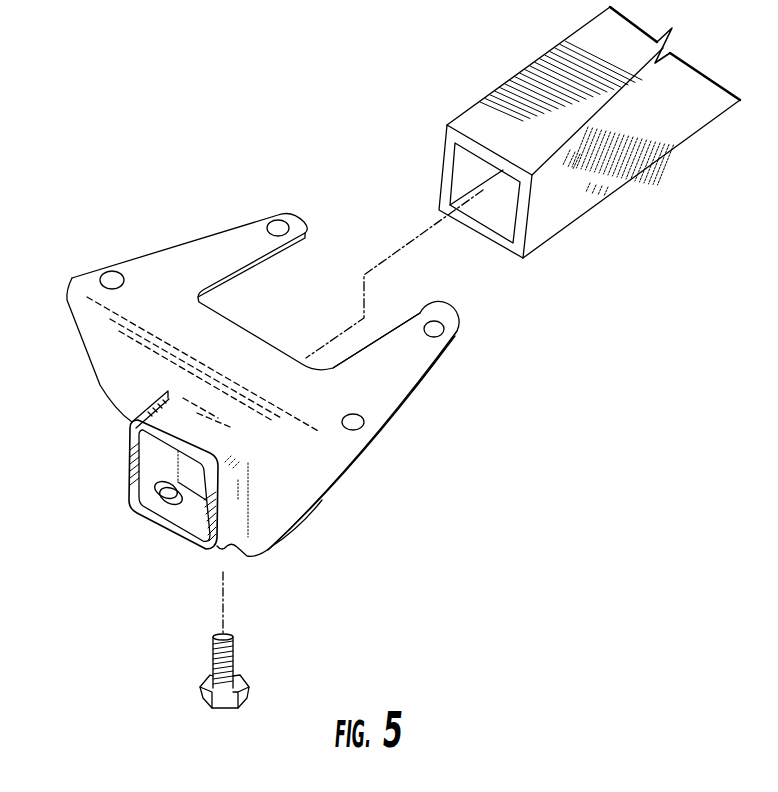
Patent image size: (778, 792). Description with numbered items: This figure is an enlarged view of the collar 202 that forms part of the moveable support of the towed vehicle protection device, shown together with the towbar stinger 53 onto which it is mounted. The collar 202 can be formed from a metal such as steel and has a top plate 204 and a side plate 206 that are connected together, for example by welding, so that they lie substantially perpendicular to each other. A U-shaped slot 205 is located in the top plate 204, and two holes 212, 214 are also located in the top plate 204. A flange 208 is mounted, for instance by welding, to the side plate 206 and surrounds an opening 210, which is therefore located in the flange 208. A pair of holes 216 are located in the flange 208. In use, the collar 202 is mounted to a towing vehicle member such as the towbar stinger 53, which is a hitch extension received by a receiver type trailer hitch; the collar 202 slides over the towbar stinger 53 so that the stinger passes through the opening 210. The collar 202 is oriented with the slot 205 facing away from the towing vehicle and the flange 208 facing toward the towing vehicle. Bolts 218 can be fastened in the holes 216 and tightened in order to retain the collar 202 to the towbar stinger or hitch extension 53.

The towbar stinger 53 is at (517, 75).
The collar 202 is at (170, 243).
The top plate 204 is at (402, 380).
The U-shaped slot 205 is at (313, 283).
The side plate 206 is at (305, 488).
The flange 208 is at (142, 485).
The opening 210 is at (158, 460).
The hole 212 is at (444, 334).
The hole 214 is at (363, 423).
The holes 216 is at (165, 498).
The bolt 218 is at (247, 673).